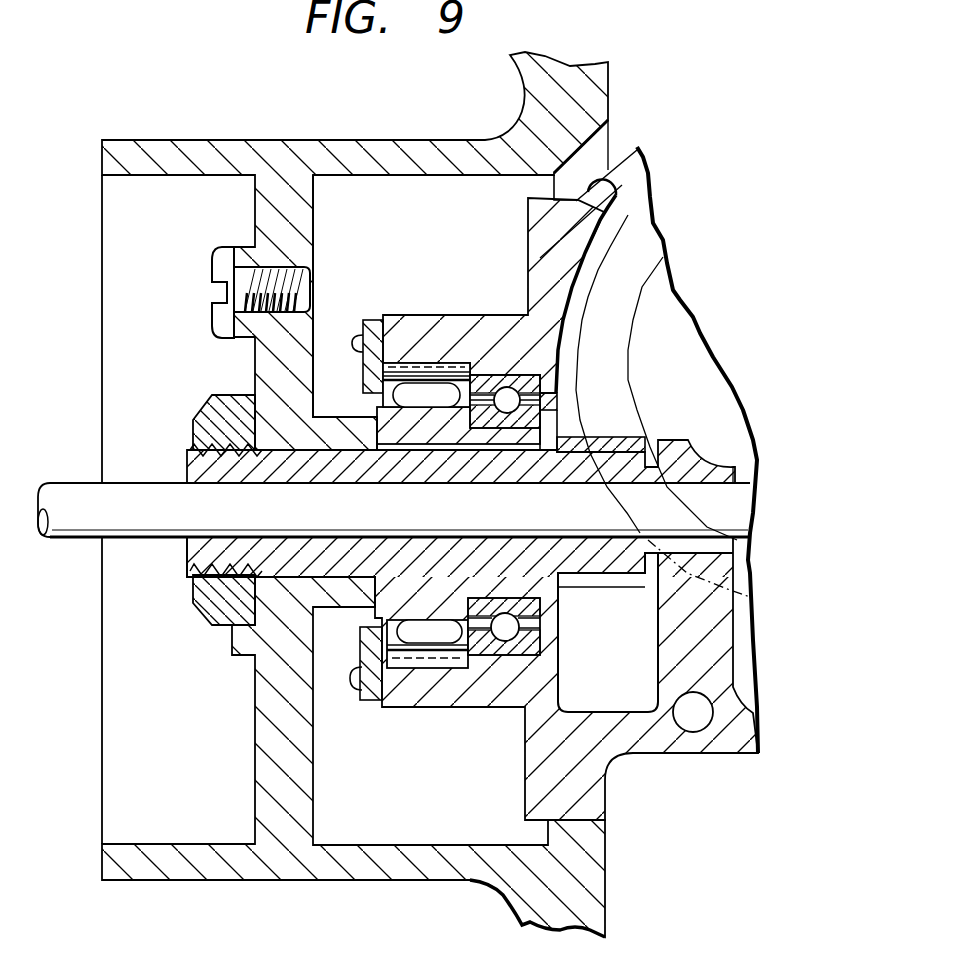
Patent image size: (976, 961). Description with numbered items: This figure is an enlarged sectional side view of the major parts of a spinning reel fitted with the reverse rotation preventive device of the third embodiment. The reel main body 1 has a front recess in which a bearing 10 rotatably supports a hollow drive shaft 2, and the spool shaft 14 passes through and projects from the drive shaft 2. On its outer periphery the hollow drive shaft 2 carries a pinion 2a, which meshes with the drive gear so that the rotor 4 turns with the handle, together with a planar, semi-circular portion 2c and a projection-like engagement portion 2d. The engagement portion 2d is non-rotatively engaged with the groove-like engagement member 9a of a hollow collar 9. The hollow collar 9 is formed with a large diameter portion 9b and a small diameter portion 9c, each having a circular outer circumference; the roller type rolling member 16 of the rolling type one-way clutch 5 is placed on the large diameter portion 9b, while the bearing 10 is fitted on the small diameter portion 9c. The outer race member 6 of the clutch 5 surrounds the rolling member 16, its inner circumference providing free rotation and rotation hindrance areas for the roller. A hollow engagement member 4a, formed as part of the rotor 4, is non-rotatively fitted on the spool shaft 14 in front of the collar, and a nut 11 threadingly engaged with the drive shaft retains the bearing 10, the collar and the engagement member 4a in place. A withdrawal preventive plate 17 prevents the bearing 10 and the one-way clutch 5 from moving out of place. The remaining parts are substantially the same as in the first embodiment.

The reel main body 1 is at (689, 758).
The hollow drive shaft 2 is at (186, 470).
The pinion 2a is at (603, 588).
The planer and semi-circular portion 2c is at (557, 414).
The projection-like engagement portion 2d is at (533, 450).
The rotor 4 is at (610, 118).
The hollow engagement member 4a is at (318, 340).
The rolling type one-way clutch 5 is at (428, 356).
The outer race member 6 is at (400, 376).
The hollow collar 9 is at (372, 431).
The groove-like engagement member 9a is at (513, 430).
The large diameter portion 9b is at (413, 620).
The small diameter portion 9c is at (480, 633).
The bearing 10 is at (557, 397).
The nut 11 is at (202, 420).
The spool shaft 14 is at (63, 540).
The roller type rolling member 16 is at (452, 355).
The withdrawal preventive plate 17 is at (378, 318).